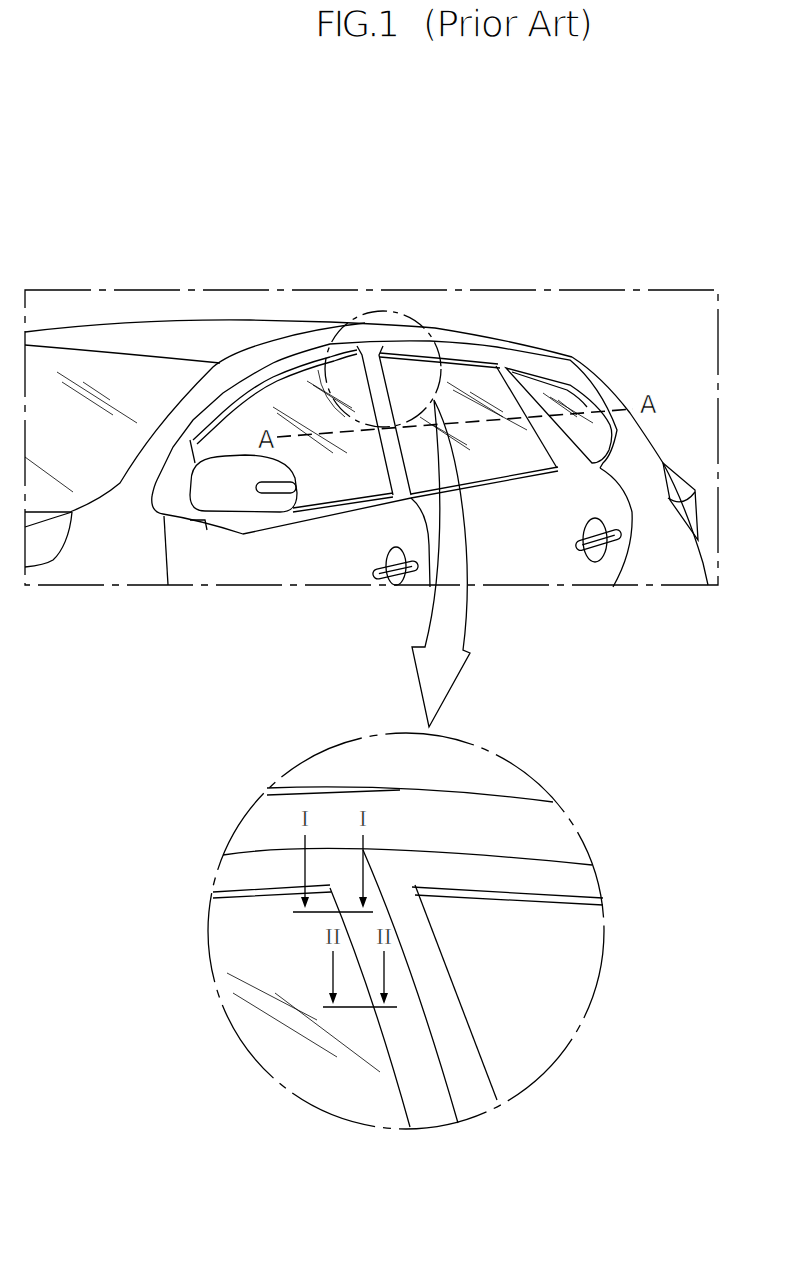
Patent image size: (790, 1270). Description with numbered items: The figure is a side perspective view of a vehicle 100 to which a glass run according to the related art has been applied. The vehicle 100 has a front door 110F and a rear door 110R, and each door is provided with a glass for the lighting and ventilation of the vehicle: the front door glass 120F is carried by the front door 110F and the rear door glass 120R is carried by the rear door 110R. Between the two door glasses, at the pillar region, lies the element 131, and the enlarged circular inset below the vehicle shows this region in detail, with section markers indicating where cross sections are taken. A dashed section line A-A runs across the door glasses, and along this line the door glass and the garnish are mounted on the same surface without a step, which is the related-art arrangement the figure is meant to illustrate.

The vehicle 100 is at (680, 182).
The front door 110F is at (323, 560).
The rear door 110R is at (517, 560).
The front door glass 120F is at (290, 397).
The rear door glass 120R is at (481, 376).
The center pillar (B-pillar) garnish 131 is at (380, 397).